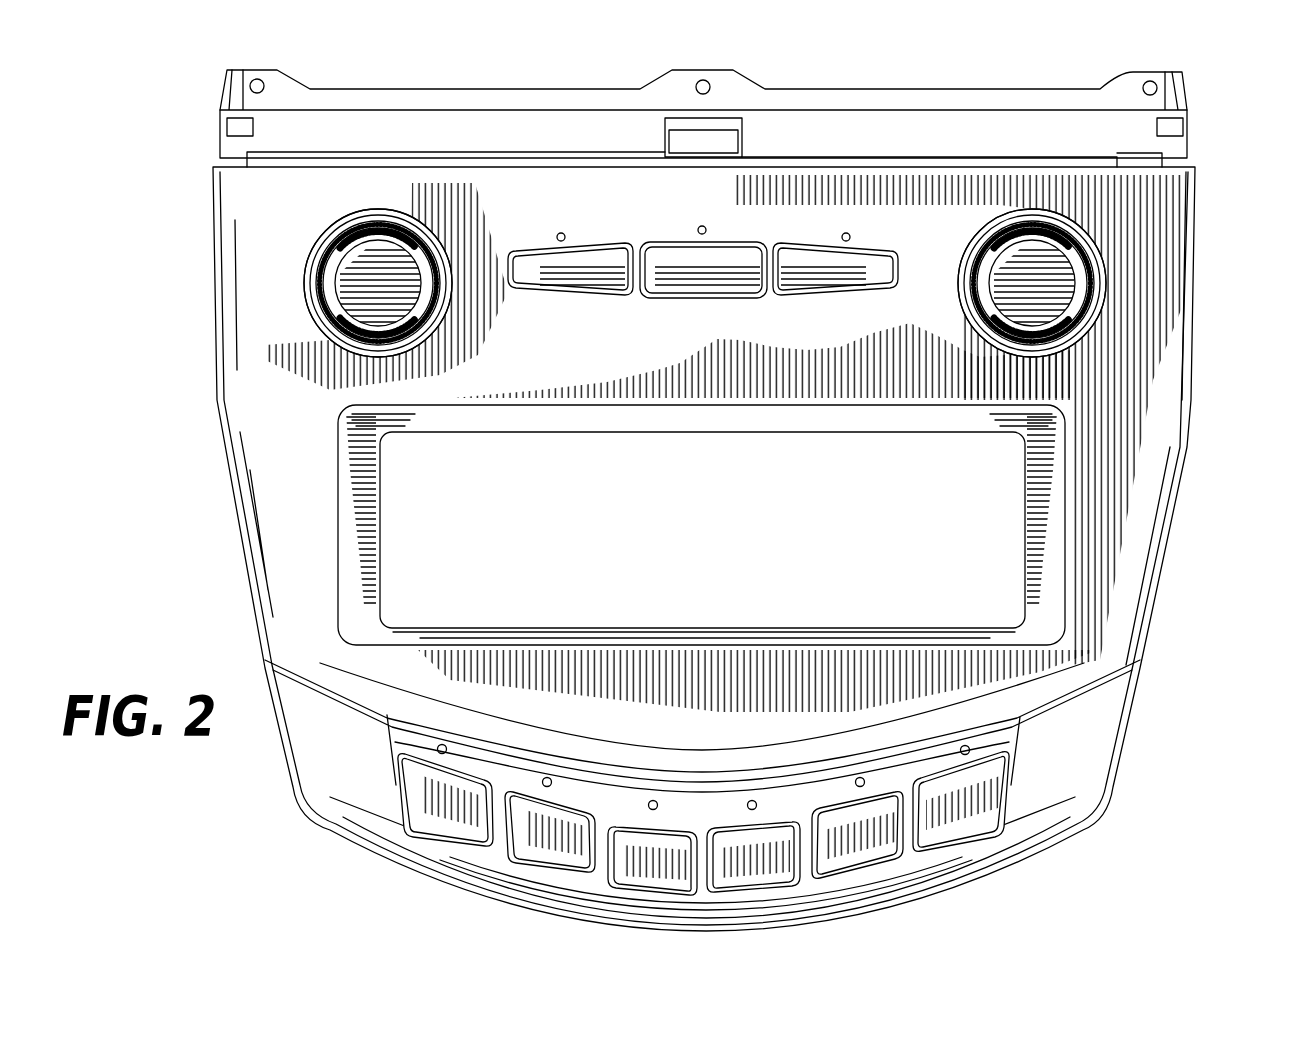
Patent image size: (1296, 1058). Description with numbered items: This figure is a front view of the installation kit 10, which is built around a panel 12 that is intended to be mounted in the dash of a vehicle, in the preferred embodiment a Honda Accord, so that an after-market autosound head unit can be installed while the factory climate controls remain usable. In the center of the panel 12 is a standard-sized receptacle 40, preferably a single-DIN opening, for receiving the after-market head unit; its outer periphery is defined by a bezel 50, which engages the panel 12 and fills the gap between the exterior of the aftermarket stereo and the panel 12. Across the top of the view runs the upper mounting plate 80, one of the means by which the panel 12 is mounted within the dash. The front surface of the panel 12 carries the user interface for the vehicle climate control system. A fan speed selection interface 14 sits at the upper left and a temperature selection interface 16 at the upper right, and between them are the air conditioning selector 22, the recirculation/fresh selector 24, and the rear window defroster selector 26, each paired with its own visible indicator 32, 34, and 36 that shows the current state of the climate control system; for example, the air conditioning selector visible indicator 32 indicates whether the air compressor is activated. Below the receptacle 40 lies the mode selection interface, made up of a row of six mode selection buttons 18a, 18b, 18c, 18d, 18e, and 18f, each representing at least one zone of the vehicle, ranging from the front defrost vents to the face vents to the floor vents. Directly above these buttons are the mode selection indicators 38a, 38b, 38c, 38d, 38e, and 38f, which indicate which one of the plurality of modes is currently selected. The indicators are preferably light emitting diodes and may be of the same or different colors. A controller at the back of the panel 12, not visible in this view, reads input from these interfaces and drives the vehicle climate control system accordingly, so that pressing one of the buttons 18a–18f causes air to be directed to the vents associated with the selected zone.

The installation kit 10 is at (1180, 684).
The panel 12 is at (1157, 450).
The fan speed selection interface 14 is at (320, 242).
The temperature selection interface 16 is at (958, 275).
The mode selection button 18a is at (413, 802).
The mode selection button 18b is at (508, 837).
The mode selection button 18c is at (647, 863).
The mode selection button 18d is at (780, 870).
The mode selection button 18e is at (890, 837).
The mode selection button 18f is at (965, 810).
The air conditioning selector 22 is at (592, 282).
The recirculation/fresh selector 24 is at (687, 275).
The rear window defroster selector 26 is at (842, 272).
The air conditioning selector visible indicator 32 is at (558, 235).
The visible indicator 34 is at (698, 228).
The visible indicator 36 is at (842, 235).
The mode selection indicator 38a is at (441, 744).
The mode selection indicator 38b is at (546, 777).
The mode selection indicator 38c is at (652, 800).
The mode selection indicator 38d is at (750, 800).
The mode selection indicator 38e is at (858, 777).
The mode selection indicator 38f is at (962, 746).
The receptacle 40 is at (395, 472).
The bezel 50 is at (376, 585).
The upper mounting plate 80 is at (890, 100).